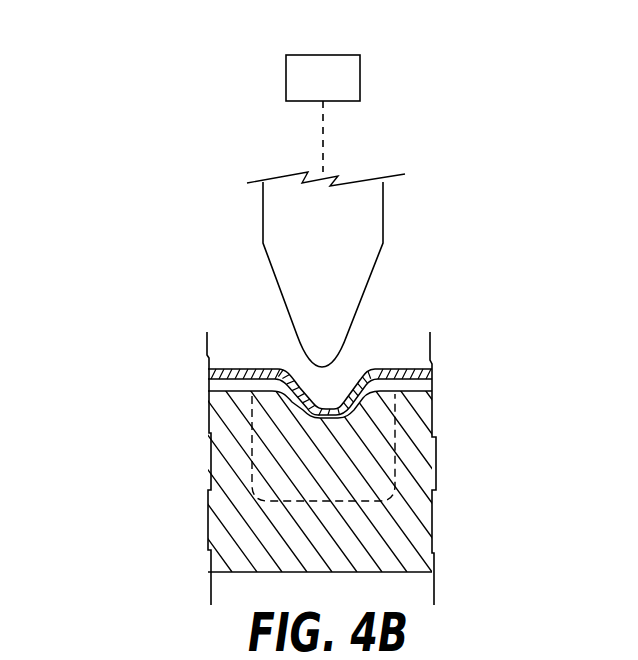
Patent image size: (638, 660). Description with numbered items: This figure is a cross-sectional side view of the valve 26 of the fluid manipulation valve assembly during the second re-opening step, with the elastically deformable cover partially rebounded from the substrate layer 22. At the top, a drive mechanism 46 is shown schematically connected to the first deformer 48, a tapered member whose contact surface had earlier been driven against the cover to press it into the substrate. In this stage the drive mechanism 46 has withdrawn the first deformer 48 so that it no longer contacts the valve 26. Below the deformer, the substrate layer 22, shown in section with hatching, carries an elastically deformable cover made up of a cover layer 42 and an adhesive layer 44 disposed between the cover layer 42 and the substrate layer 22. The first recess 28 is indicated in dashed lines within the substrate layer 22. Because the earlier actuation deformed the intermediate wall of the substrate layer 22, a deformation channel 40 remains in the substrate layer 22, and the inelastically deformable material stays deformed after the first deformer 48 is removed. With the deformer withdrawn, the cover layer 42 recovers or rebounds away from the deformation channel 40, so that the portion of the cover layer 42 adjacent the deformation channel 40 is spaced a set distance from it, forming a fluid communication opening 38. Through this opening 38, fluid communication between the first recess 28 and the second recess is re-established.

The drive mechanism 46 is at (297, 71).
The first deformer 48 is at (383, 213).
The valve 26 is at (163, 293).
The substrate layer 22 is at (400, 527).
The adhesive layer 44 is at (432, 385).
The cover layer 42 is at (432, 375).
The first recess 28 is at (252, 459).
The deformation channel 40 is at (330, 415).
The fluid communication opening 38 is at (330, 417).